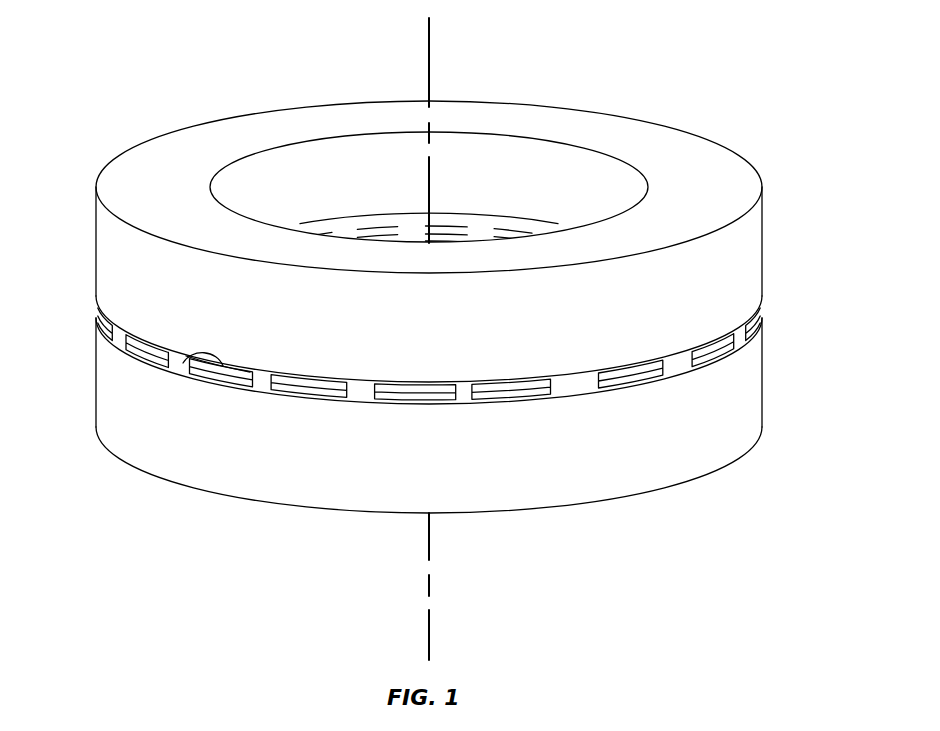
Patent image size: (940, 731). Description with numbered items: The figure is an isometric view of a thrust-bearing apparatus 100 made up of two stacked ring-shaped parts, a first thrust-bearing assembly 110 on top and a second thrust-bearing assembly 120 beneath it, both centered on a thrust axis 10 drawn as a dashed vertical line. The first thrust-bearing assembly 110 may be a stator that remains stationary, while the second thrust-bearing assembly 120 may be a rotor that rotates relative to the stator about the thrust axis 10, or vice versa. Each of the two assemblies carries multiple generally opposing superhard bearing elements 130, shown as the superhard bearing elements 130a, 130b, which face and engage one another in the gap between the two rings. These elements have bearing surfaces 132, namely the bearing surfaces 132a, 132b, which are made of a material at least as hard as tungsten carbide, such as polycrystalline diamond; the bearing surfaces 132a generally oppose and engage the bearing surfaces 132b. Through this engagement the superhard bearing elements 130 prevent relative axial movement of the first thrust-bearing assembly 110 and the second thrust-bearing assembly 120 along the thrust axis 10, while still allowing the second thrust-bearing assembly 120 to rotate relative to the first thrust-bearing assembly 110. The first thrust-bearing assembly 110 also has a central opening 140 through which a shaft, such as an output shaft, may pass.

The thrust axis 10 is at (430, 48).
The thrust-bearing apparatus 100 is at (752, 121).
The first thrust-bearing assembly 110 is at (767, 240).
The second thrust-bearing assembly 120 is at (767, 359).
The superhard bearing elements 130 is at (118, 497).
The superhard bearing element 130a is at (244, 377).
The superhard bearing element 130b is at (266, 392).
The bearing surfaces 132 is at (36, 472).
The bearing surface 132a is at (185, 355).
The bearing surface 132b is at (187, 347).
The opening 140 is at (460, 194).